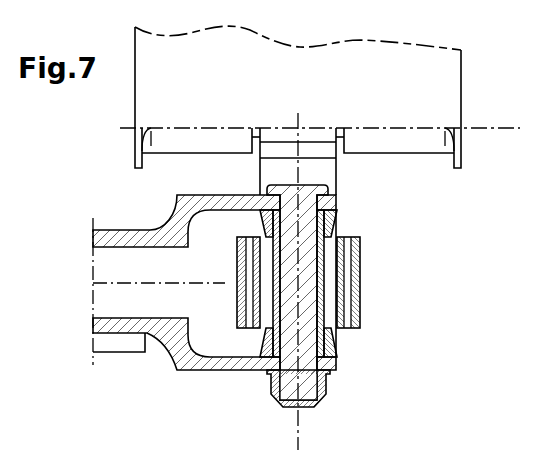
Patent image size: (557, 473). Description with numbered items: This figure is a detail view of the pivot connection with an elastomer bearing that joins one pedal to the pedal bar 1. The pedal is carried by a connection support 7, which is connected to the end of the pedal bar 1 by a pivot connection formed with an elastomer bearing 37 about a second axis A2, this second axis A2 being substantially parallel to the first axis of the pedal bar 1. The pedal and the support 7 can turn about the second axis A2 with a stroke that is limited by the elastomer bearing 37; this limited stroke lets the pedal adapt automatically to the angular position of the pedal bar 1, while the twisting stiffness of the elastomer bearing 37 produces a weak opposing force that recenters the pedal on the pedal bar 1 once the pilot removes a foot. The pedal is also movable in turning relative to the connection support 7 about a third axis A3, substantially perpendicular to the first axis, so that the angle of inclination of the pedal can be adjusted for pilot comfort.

The connection support 7 is at (330, 173).
The pedal bar 1 is at (192, 368).
The elastomer bearing 37 is at (345, 283).
The third axis A3 is at (505, 128).
The second axis A2 is at (298, 435).